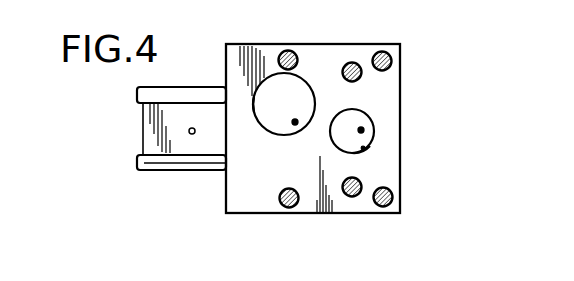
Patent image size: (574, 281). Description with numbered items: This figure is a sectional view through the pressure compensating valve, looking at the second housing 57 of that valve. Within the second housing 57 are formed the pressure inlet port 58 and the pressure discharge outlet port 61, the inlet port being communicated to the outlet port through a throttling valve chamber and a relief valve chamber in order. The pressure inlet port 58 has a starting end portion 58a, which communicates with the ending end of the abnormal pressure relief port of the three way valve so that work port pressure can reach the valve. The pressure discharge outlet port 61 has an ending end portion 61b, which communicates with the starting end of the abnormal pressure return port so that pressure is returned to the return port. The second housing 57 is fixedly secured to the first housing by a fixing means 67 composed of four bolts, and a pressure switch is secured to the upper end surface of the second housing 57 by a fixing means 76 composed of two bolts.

The second housing 57 is at (401, 87).
The pressure inlet port 58 is at (364, 129).
The starting end portion 58a is at (364, 148).
The pressure discharge outlet port 61 is at (294, 126).
The ending end portion 61b is at (254, 107).
The fixing means 67 is at (377, 51).
The fixing means 76 is at (353, 81).